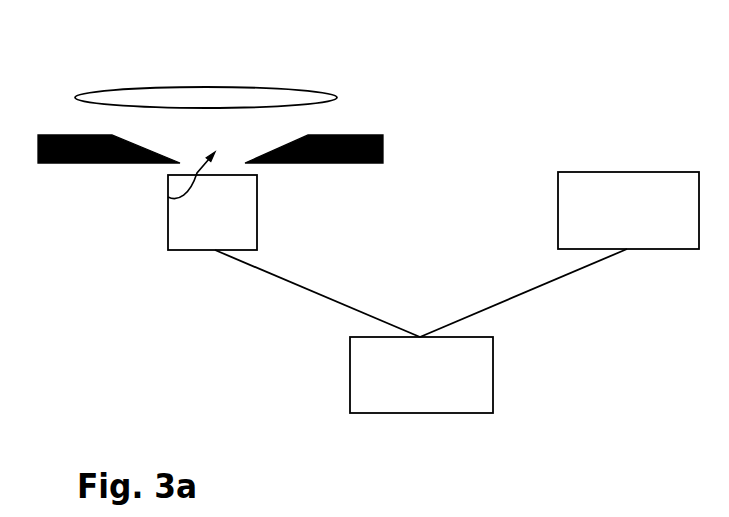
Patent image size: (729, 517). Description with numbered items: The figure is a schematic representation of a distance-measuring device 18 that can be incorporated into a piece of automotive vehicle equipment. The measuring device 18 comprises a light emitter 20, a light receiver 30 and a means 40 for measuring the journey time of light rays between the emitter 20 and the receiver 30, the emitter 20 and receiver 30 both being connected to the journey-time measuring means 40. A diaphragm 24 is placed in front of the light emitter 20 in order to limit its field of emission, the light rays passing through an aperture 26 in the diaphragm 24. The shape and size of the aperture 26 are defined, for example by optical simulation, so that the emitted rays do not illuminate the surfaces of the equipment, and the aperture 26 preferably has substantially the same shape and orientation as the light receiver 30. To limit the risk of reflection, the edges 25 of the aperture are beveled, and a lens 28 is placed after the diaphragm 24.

The measuring device 18 is at (368, 240).
The light emitter 20 is at (188, 235).
The diaphragm 24 is at (235, 183).
The aperture opening 25 is at (362, 135).
The aperture 26 is at (168, 197).
The lens 28 is at (208, 87).
The light receiver 30 is at (653, 233).
The means for measuring the journey time 40 is at (403, 380).